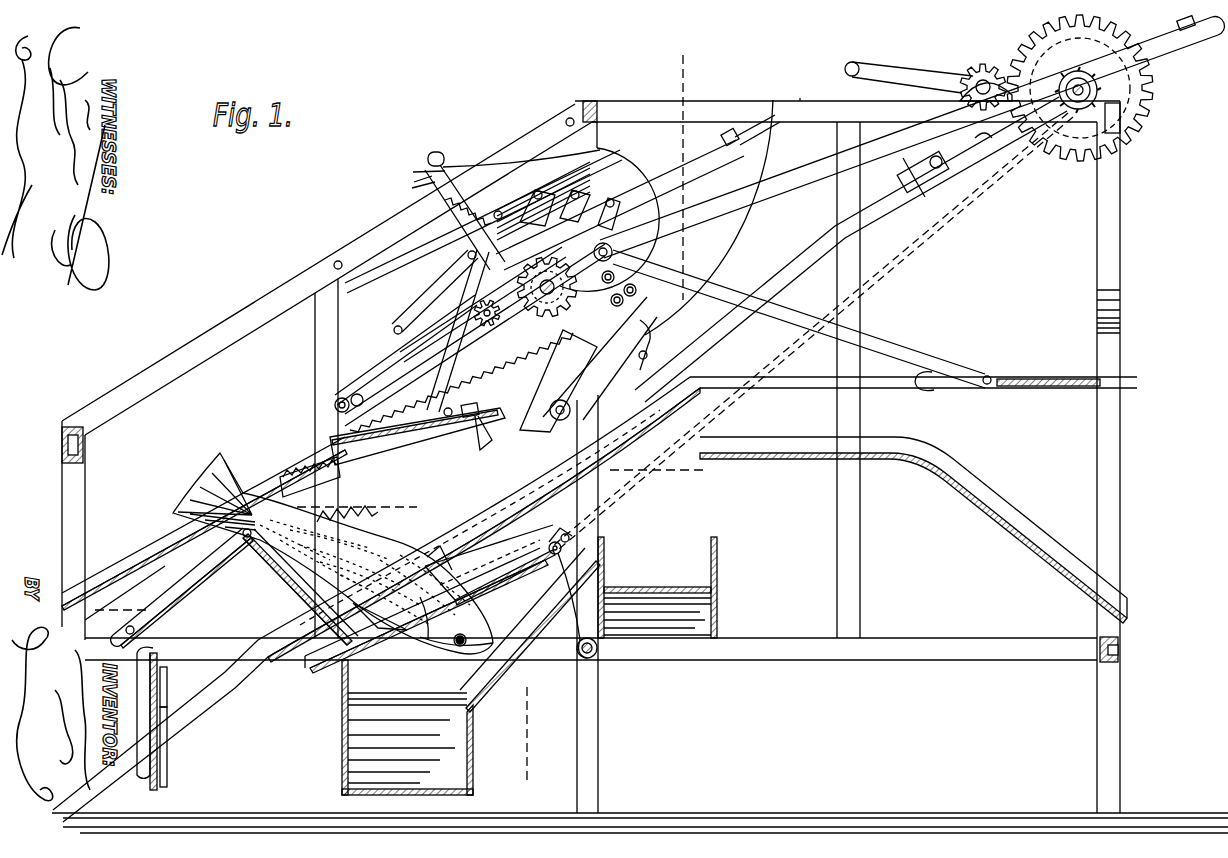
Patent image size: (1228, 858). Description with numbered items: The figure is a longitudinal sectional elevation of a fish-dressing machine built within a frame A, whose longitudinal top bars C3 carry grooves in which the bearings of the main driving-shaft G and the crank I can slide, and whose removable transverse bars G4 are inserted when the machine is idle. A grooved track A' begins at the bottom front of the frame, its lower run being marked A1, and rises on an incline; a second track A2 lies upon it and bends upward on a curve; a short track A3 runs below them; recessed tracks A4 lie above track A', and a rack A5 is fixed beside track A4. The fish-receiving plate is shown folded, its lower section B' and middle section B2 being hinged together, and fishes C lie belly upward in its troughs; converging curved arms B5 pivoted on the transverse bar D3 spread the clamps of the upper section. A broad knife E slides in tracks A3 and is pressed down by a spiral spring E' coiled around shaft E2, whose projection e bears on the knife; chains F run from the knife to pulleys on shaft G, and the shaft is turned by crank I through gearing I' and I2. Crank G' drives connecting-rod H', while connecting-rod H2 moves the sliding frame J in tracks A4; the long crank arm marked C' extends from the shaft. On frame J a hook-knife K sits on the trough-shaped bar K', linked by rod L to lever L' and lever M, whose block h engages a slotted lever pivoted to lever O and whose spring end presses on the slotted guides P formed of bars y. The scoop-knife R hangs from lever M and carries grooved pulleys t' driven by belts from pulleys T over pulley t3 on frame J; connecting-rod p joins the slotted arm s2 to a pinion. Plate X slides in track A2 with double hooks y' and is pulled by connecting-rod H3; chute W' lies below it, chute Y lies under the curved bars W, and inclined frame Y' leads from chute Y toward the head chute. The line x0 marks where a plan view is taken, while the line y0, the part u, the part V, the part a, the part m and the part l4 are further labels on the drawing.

The frame A is at (591, 434).
The horizontally-grooved track A' is at (479, 519).
The second track A2 is at (913, 395).
The short horizontally-grooved track A3 is at (318, 668).
The horizontally-recessed tracks A4 is at (204, 520).
The rack A5 is at (442, 370).
The lower inclined bar A1 is at (160, 731).
The lower section of fish-receiving plate B' is at (160, 723).
The middle section of fish-receiving plate B2 is at (182, 588).
The converging curved arms B5 is at (300, 587).
The fish C is at (983, 144).
The crank lever C' is at (1176, 53).
The longitudinal top bars C3 is at (797, 93).
The transverse bar D3 is at (370, 648).
The broad knife E is at (490, 565).
The spiral spring E' is at (567, 596).
The shaft E2 is at (598, 656).
The spring projection e is at (556, 556).
The chains F is at (813, 331).
The main driving-shaft G is at (1079, 79).
The long crank G' is at (1165, 53).
The removable transverse bars G4 is at (62, 445).
The connecting-rod H' is at (851, 249).
The connecting-rod H2 is at (912, 137).
The pivoted connecting-rod H3 is at (799, 319).
The crank I is at (909, 77).
The intermediate gear I' is at (986, 75).
The intermediate gear I2 is at (1080, 88).
The sliding frame J is at (483, 304).
The hook-knife K is at (407, 727).
The trough-shaped bar K' is at (417, 426).
The bar or rod L is at (452, 333).
The lever L' is at (435, 292).
The lever M is at (638, 192).
The arm m is at (652, 343).
The lever O is at (608, 245).
The longitudinally-slotted guides P is at (432, 256).
The connecting-rod p is at (382, 384).
The scoop-knife R is at (588, 364).
The longitudinally-slotted arm s2 is at (343, 401).
The grooved pulleys T is at (525, 284).
The grooved pulleys t' is at (634, 288).
The pulley t3 is at (620, 272).
The bracket u is at (440, 167).
The rod V is at (491, 163).
The slide bar a is at (465, 217).
The curved bars W is at (666, 217).
The chute W' is at (913, 530).
The sliding plate or frame X is at (1022, 378).
The chute Y is at (657, 587).
The inclined frame Y' is at (530, 630).
The bars y is at (559, 203).
The double hooks y' is at (953, 393).
The center line y0 is at (602, 418).
The section line x0 is at (712, 468).
The block h is at (749, 137).
The block l4 is at (1112, 118).